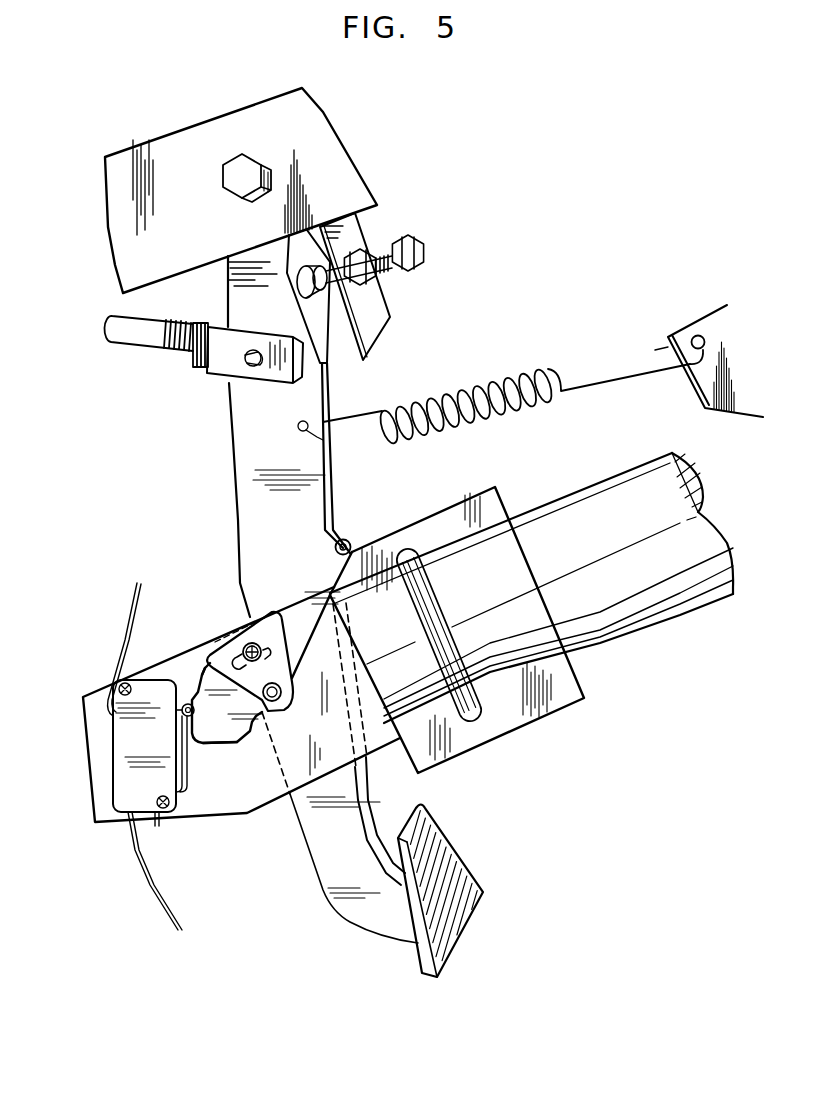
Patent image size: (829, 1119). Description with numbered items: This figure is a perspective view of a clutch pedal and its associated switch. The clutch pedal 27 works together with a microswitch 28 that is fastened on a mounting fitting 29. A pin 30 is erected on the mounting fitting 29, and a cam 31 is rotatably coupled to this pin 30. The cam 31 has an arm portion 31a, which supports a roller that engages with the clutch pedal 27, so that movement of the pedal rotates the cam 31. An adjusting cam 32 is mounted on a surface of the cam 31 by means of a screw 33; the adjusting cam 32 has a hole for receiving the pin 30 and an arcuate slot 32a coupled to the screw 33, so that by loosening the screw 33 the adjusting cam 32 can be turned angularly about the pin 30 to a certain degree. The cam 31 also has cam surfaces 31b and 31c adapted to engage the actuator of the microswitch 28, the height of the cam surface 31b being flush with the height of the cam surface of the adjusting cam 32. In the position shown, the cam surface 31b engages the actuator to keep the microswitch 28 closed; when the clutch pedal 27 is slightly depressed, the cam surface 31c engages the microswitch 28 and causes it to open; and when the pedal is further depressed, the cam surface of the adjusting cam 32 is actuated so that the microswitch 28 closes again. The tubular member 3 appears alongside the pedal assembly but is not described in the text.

The tubular support member 3 is at (541, 513).
The clutch pedal 27 is at (232, 473).
The microswitch 28 is at (143, 760).
The mounting fitting 29 is at (247, 803).
The pin 30 is at (282, 706).
The cam 31 is at (265, 716).
The arm portion 31a is at (310, 582).
The cam surface 31b is at (222, 743).
The cam surface 31c is at (203, 690).
The adjusting cam 32 is at (268, 613).
The arcuate slot 32a is at (235, 645).
The screw 33 is at (247, 645).